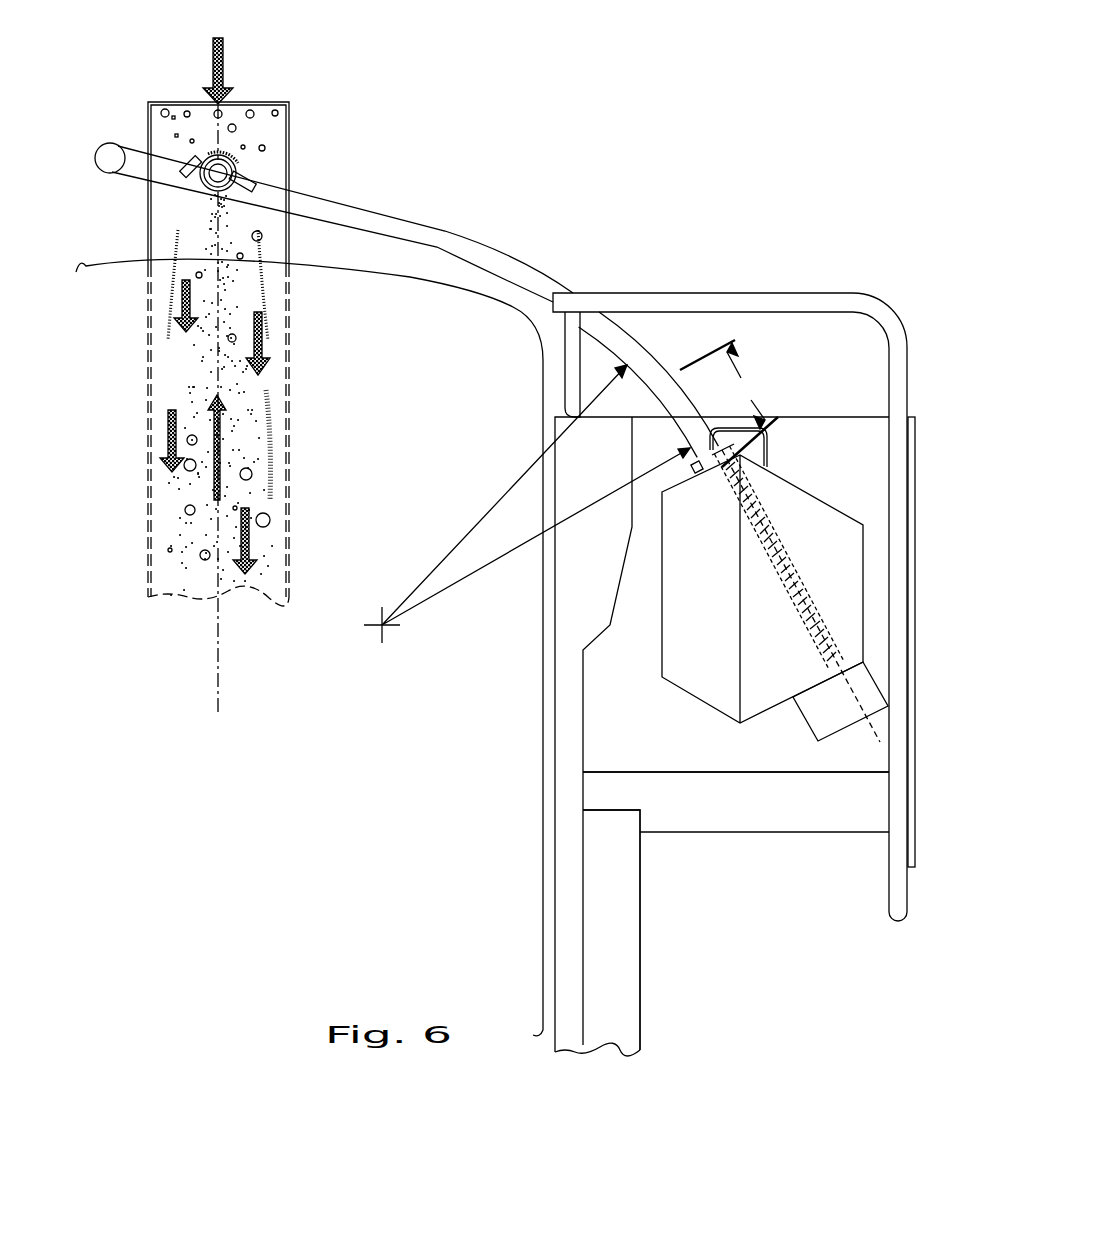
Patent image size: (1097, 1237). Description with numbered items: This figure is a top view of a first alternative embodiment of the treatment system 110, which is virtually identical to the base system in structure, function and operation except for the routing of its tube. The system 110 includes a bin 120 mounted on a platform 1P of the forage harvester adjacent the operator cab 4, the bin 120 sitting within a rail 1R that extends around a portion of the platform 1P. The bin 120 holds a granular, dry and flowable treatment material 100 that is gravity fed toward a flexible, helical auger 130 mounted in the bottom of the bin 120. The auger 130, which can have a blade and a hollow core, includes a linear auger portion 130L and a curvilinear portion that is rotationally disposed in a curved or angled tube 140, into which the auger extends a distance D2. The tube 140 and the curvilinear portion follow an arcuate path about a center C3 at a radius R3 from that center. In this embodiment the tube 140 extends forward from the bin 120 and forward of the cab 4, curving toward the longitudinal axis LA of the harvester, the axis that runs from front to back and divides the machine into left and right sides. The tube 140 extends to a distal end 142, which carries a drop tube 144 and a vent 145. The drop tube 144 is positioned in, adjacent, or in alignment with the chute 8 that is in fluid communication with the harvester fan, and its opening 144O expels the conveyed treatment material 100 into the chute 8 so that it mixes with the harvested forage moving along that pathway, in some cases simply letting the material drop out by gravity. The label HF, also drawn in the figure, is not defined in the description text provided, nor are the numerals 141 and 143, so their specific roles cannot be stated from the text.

The operator cab 4 is at (432, 283).
The chute 8 is at (291, 132).
The hot fluid HF is at (263, 147).
The treatment material 100 is at (195, 205).
The system 110 is at (814, 348).
The bin 120 is at (813, 493).
The flexible helical auger 130 is at (793, 582).
The linear auger portion 130L is at (753, 537).
The curved or angled tube 140 is at (592, 300).
The bracket 141 is at (702, 457).
The distal end 142 is at (258, 185).
The feed pipe 143 is at (525, 265).
The drop tube 144 is at (210, 160).
The opening 144O is at (238, 154).
The vent 145 is at (100, 150).
The platform 1P is at (714, 808).
The rail 1R is at (897, 893).
The longitudinal axis LA is at (221, 658).
The distance D2 is at (729, 403).
The radius R3 is at (468, 577).
The center C3 is at (382, 625).